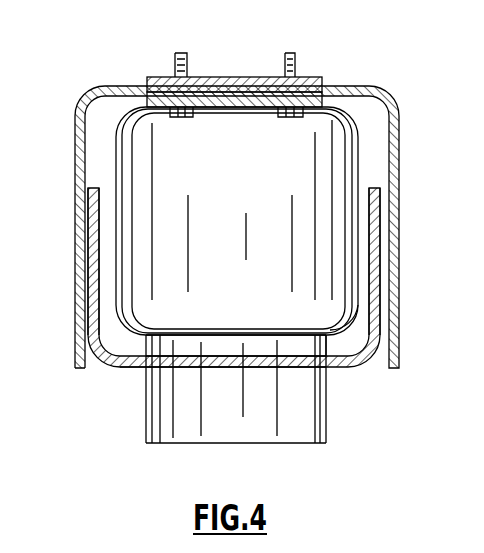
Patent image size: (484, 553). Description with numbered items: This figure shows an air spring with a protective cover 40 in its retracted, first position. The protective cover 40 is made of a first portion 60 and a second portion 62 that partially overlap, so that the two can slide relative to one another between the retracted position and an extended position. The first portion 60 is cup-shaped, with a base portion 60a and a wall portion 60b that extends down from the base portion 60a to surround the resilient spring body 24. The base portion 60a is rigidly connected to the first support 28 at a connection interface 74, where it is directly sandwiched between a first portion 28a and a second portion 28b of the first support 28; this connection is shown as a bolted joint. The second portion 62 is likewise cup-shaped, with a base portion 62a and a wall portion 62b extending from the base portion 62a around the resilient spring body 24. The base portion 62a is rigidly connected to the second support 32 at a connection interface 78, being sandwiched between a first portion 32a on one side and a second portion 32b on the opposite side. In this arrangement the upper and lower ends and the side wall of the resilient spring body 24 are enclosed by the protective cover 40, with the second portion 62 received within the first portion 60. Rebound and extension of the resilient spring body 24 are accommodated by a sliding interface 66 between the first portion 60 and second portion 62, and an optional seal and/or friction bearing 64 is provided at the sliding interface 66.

The protective cover 40 is at (402, 86).
The first portion 60 is at (250, 202).
The base portion 60a is at (340, 84).
The wall portion 60b is at (398, 303).
The seal and/or friction bearing 64 is at (400, 189).
The connection interface 74 is at (160, 66).
The first support 28 is at (302, 76).
The first portion of first support 28a is at (265, 76).
The second portion of first support 28b is at (233, 106).
The sliding interface 66 is at (340, 181).
The second portion 62 is at (201, 307).
The base portion 62a is at (225, 368).
The wall portion 62b is at (96, 276).
The connection interface 78 is at (140, 374).
The resilient spring body 24 is at (335, 324).
The second support 32 is at (256, 393).
The first portion of second support 32a is at (313, 433).
The second portion of second support 32b is at (268, 349).